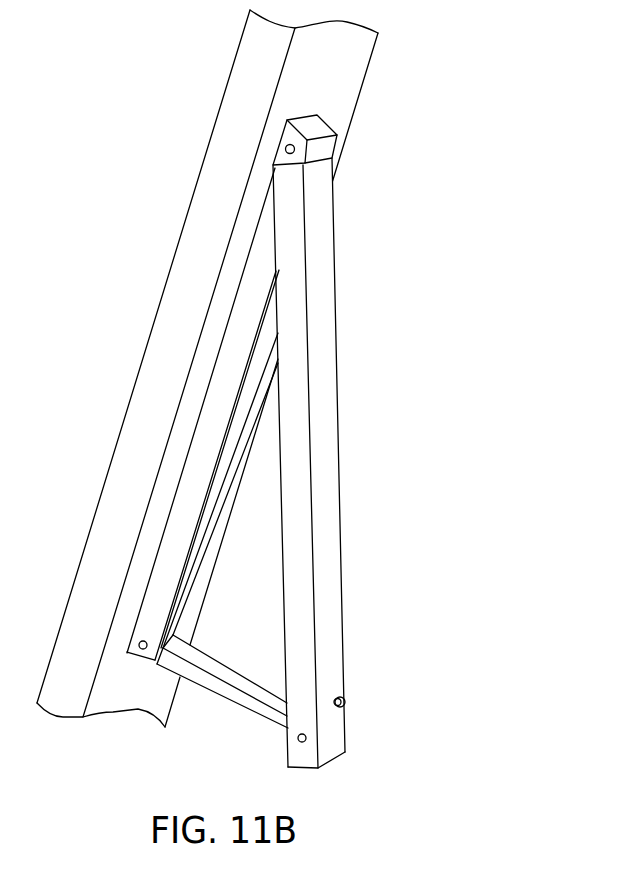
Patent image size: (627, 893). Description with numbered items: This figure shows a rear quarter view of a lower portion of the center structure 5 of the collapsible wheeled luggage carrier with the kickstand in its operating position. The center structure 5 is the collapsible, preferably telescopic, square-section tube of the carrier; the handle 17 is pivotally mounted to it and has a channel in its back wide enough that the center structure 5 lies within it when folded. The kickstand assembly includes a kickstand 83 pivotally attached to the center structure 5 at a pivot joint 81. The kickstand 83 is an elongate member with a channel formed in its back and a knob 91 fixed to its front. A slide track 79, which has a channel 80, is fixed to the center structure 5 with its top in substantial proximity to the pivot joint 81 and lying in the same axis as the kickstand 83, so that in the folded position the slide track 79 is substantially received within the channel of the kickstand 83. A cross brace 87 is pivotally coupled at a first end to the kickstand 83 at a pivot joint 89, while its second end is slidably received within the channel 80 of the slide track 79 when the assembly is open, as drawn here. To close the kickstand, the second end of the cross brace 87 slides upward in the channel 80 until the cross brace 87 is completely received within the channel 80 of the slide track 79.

The center structure 5 is at (378, 90).
The handle 17 is at (145, 652).
The slide track 79 is at (210, 552).
The channel 80 is at (237, 432).
The pivot joint 81 is at (284, 146).
The kickstand 83 is at (348, 457).
The cross brace 87 is at (254, 669).
The pivot joint 89 is at (303, 744).
The knob 91 is at (356, 702).